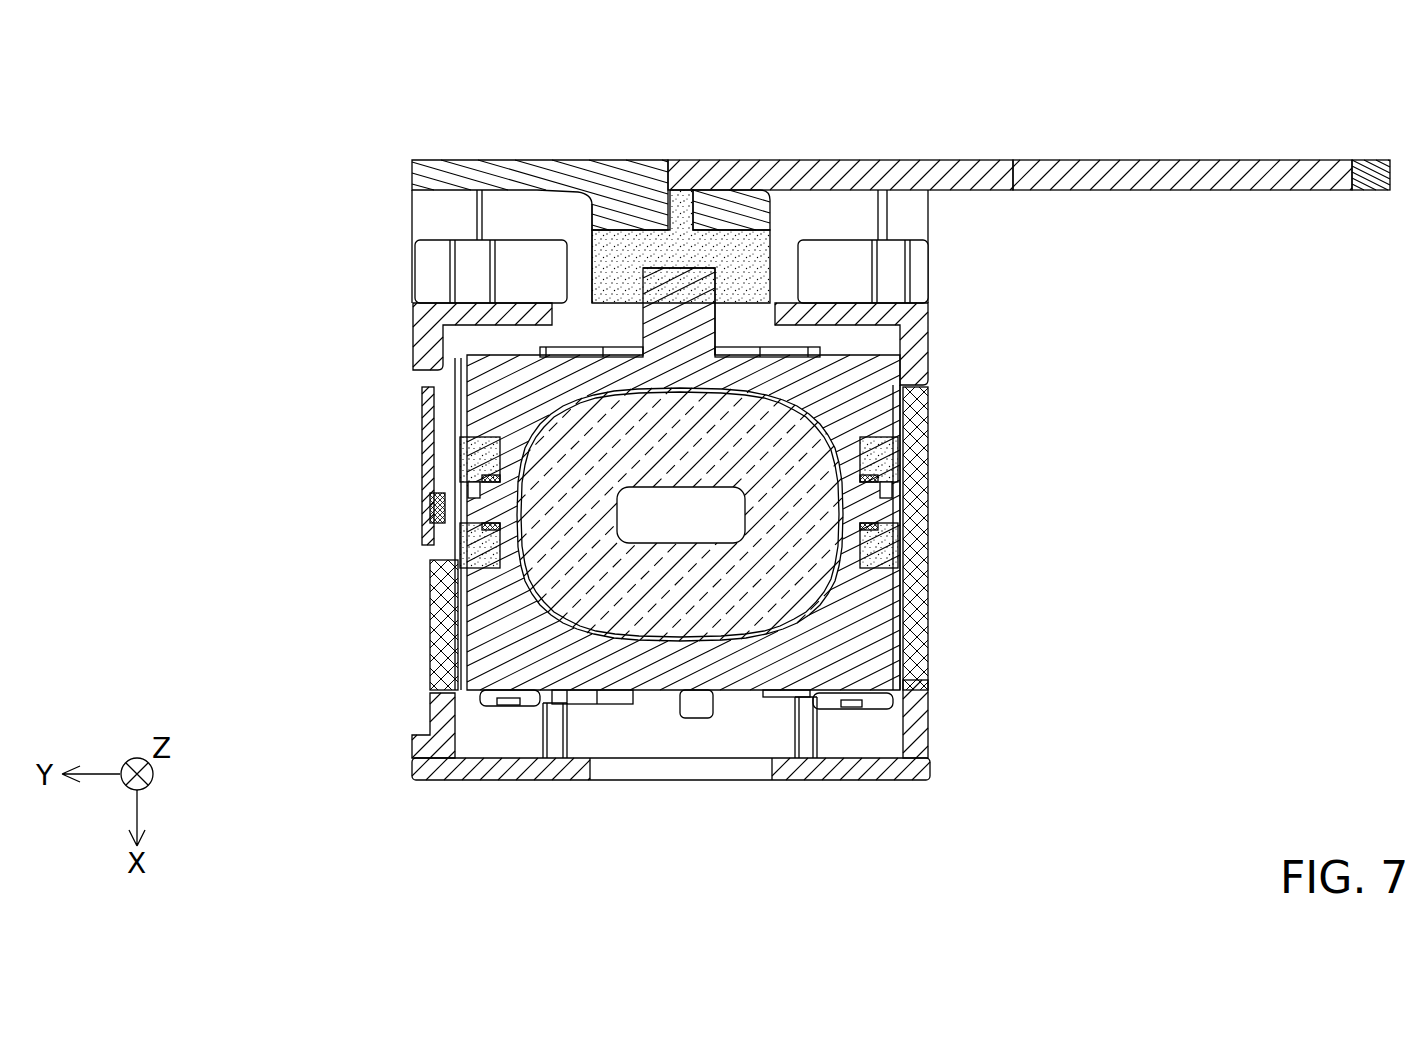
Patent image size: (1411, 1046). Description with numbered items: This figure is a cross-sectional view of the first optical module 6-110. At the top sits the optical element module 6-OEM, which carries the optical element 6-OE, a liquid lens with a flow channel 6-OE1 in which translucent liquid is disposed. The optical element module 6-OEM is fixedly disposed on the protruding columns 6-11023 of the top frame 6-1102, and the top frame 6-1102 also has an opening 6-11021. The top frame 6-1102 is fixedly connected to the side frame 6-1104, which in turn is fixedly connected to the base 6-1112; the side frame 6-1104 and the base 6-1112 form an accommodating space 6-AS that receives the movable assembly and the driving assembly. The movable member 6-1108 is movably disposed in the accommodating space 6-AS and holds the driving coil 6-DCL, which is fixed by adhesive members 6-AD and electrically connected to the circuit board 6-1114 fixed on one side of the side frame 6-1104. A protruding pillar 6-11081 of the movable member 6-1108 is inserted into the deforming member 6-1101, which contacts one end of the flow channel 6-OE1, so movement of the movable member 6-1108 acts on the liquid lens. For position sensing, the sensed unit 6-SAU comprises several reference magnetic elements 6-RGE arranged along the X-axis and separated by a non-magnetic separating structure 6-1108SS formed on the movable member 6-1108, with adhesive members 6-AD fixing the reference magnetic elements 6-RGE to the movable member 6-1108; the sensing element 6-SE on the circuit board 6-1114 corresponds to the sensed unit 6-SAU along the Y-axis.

The first optical module 6-110 is at (207, 67).
The optical element module 6-OEM is at (633, 160).
The opening 6-11021 is at (780, 270).
The flow channel 6-OE1 is at (948, 172).
The optical element 6-OE is at (1205, 172).
The protruding column 6-11023 is at (447, 212).
The deforming member 6-1101 is at (612, 262).
The top frame 6-1102 is at (410, 292).
The protruding pillar 6-11081 is at (687, 303).
The accommodating space 6-AS is at (485, 343).
The side frame 6-1104 is at (933, 348).
The movable member 6-1108 is at (863, 400).
The reference magnetic element 6-RGE is at (490, 455).
The adhesive member 6-AD is at (490, 476).
The separating structure 6-1108SS is at (455, 500).
The sensing element 6-SE is at (440, 508).
The driving coil 6-DCL is at (790, 514).
The sensed unit 6-SAU is at (137, 566).
The circuit board 6-1114 is at (430, 626).
The base 6-1112 is at (933, 747).